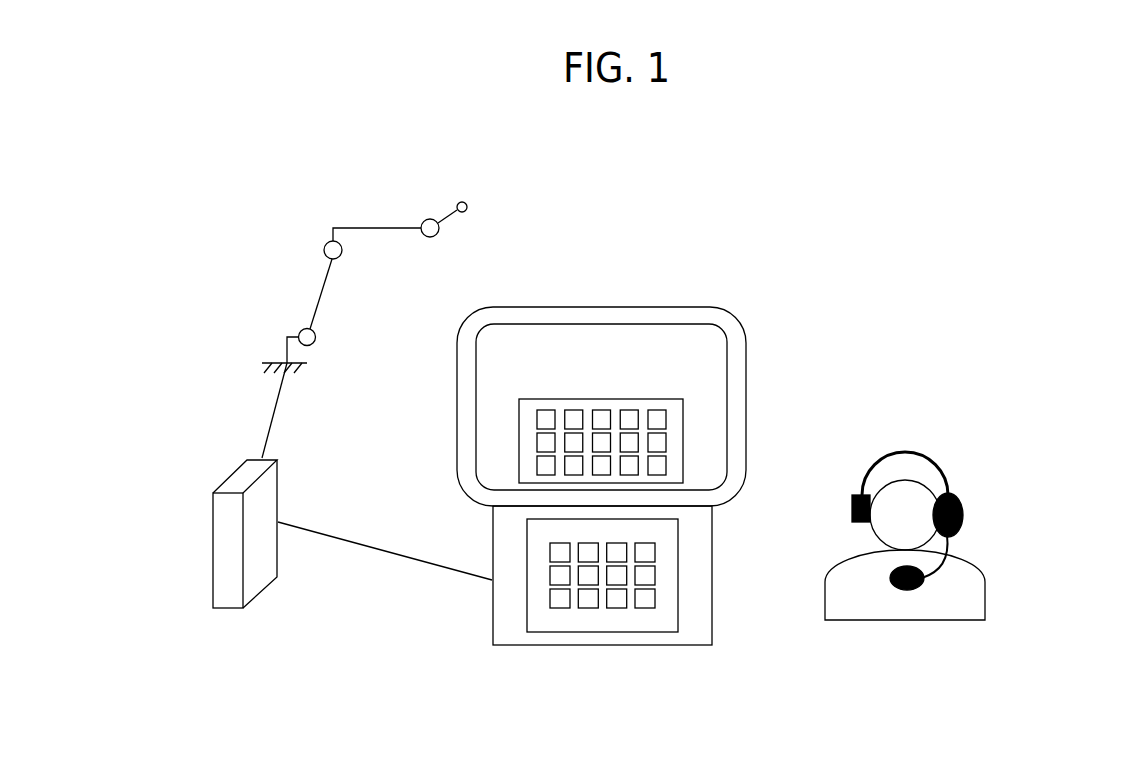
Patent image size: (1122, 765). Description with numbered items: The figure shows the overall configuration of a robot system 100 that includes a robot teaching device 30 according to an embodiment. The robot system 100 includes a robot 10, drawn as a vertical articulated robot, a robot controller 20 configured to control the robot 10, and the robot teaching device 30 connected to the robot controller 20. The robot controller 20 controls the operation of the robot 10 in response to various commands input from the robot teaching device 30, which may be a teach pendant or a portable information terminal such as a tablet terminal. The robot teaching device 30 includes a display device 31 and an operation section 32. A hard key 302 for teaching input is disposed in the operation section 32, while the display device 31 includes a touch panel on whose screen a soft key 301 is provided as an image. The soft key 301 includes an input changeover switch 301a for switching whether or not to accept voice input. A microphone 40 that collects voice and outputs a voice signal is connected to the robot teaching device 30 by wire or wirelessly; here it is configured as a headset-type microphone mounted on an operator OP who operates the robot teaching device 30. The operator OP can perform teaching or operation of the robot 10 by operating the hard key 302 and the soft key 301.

The robot system 100 is at (970, 201).
The robot 10 is at (321, 210).
The robot controller 20 is at (217, 487).
The robot teaching device 30 is at (754, 346).
The display device 31 is at (678, 325).
The operation section 32 is at (692, 633).
The soft key 301 is at (535, 464).
The input changeover switch 301a is at (663, 415).
The hard key 302 is at (543, 609).
The microphone 40 is at (939, 582).
The operator OP is at (987, 597).